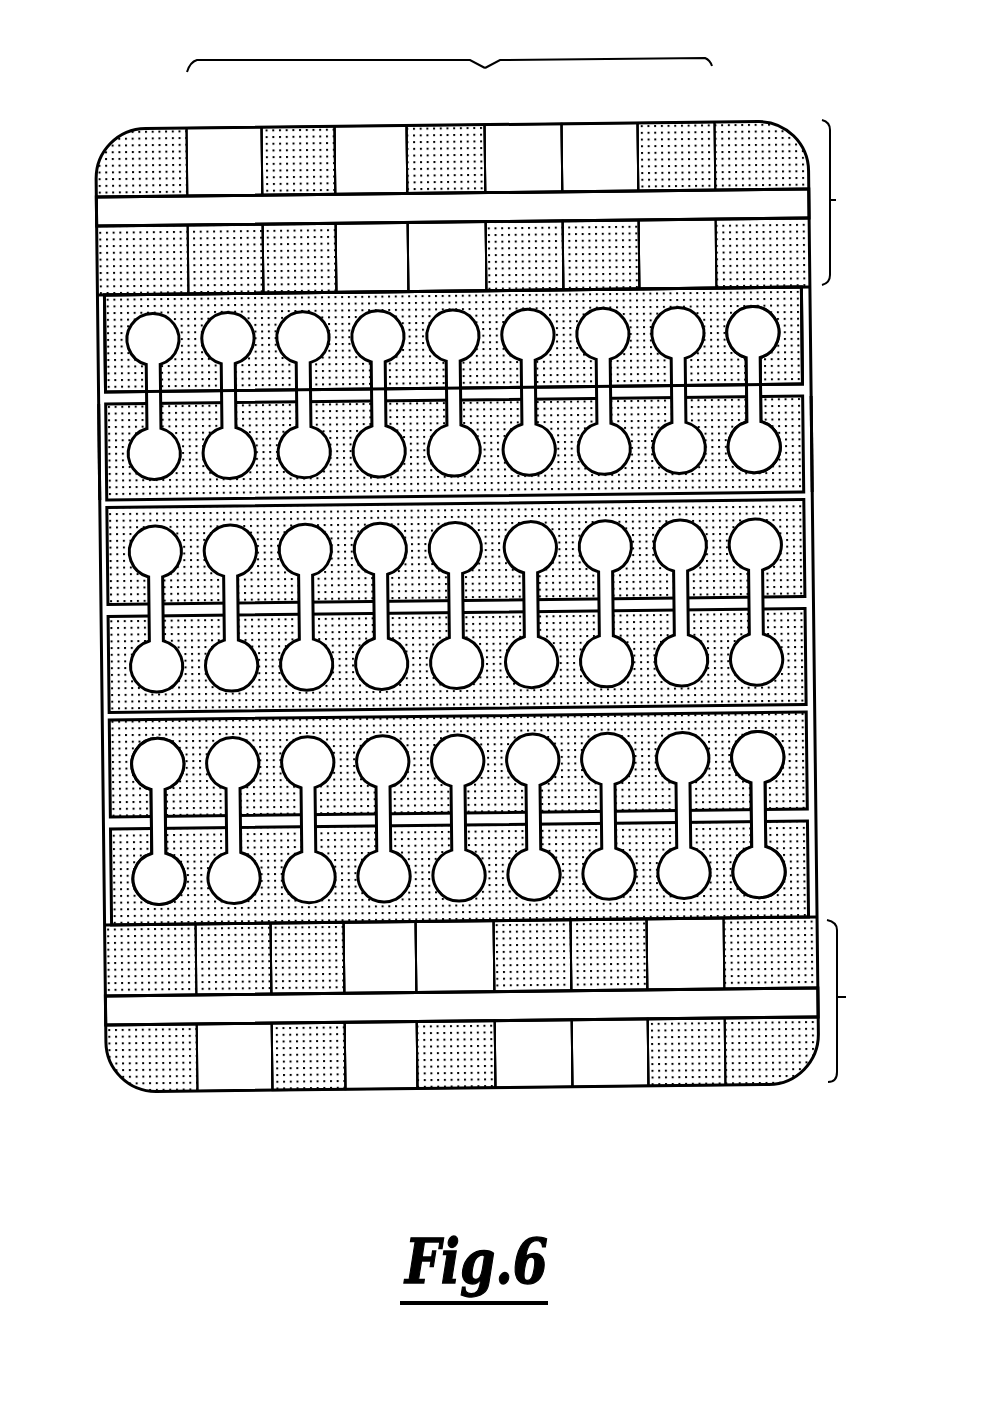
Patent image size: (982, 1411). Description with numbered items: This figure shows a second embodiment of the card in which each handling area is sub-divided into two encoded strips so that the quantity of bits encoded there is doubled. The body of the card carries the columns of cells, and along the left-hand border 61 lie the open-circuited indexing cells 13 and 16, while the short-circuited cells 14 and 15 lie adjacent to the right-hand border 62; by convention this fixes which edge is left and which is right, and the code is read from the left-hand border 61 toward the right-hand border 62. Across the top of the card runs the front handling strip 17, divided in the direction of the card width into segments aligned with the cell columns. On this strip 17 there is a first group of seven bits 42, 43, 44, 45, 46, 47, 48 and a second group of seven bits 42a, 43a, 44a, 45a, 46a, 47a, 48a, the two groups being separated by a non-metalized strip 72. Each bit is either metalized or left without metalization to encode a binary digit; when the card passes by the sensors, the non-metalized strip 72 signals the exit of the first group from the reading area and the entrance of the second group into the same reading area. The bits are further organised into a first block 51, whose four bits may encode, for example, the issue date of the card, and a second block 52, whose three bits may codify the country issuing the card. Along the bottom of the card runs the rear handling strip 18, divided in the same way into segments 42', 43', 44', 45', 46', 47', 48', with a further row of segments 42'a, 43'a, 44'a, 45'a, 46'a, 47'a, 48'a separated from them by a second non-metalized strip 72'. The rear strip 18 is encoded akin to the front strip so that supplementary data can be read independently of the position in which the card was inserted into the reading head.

The open-circuited indexing cell 13 is at (105, 343).
The short-circuited cell 14 is at (760, 342).
The short-circuited cell 15 is at (763, 873).
The open-circuited indexing cell 16 is at (148, 878).
The front handling strip 17 is at (836, 200).
The rear handling strip 18 is at (846, 997).
The bit segment 42 is at (225, 142).
The bit segment 43 is at (299, 134).
The bit segment 44 is at (371, 142).
The bit segment 45 is at (446, 131).
The bit segment 46 is at (524, 139).
The bit segment 47 is at (600, 129).
The bit segment 48 is at (677, 138).
The second-group bit segment 42a is at (226, 259).
The second-group bit segment 43a is at (300, 258).
The second-group bit segment 44a is at (372, 259).
The second-group bit segment 45a is at (447, 257).
The second-group bit segment 46a is at (525, 257).
The second-group bit segment 47a is at (601, 255).
The second-group bit segment 48a is at (678, 255).
The rear strip segment 42' is at (252, 1093).
The rear strip segment 43' is at (329, 1082).
The rear strip segment 44' is at (403, 1090).
The rear strip segment 45' is at (477, 1082).
The rear strip segment 46' is at (554, 1088).
The rear strip segment 47' is at (629, 1079).
The rear strip segment 48' is at (704, 1089).
The indicia cell 42'a is at (236, 1071).
The indicia cell 43'a is at (317, 1064).
The indicia cell 44'a is at (390, 1069).
The indicia cell 45'a is at (462, 1062).
The indicia cell 46'a is at (538, 1070).
The indicia cell 47'a is at (612, 1059).
The indicia cell 48'a is at (691, 1067).
The first bit block 51 is at (333, 52).
The second bit block 52 is at (608, 18).
The left-hand border 61 is at (98, 424).
The right-hand border 62 is at (812, 488).
The non-metalized strip 72 is at (426, 198).
The lower separation band 72' is at (431, 1016).